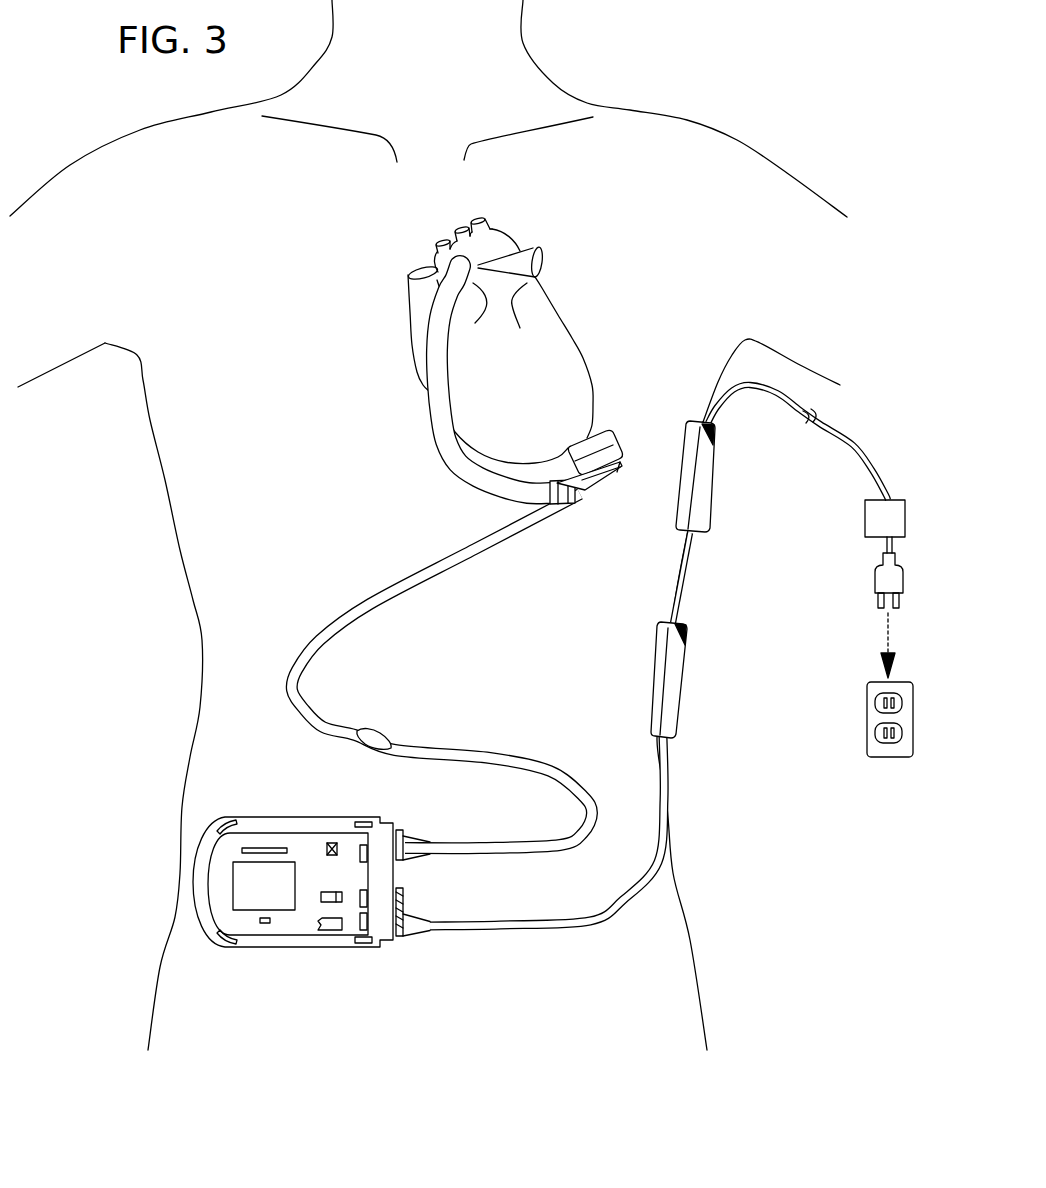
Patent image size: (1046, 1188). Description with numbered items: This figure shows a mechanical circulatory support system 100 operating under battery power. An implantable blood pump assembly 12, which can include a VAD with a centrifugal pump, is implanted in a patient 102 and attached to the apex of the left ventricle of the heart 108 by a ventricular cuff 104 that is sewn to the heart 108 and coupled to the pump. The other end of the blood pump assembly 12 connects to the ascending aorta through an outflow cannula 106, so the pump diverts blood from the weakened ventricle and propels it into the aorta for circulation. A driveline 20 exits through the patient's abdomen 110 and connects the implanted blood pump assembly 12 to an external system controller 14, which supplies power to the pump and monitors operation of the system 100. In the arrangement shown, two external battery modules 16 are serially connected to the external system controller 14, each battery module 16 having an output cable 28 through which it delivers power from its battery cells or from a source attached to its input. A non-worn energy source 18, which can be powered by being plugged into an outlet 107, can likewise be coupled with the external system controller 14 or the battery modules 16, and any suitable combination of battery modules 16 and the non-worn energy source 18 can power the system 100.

The mechanical circulatory support system 100 is at (693, 707).
The patient 102 is at (61, 358).
The ventricular cuff 104 is at (595, 432).
The outflow cannula 106 is at (432, 416).
The heart 108 is at (543, 347).
The abdomen 110 is at (377, 740).
The implantable blood pump assembly 12 is at (620, 462).
The external system controller 14 is at (200, 840).
The external battery module 16 is at (700, 470).
The non-worn energy source 18 is at (865, 520).
The driveline 20 is at (397, 593).
The output cable 28 is at (730, 402).
The outlet 107 is at (867, 713).